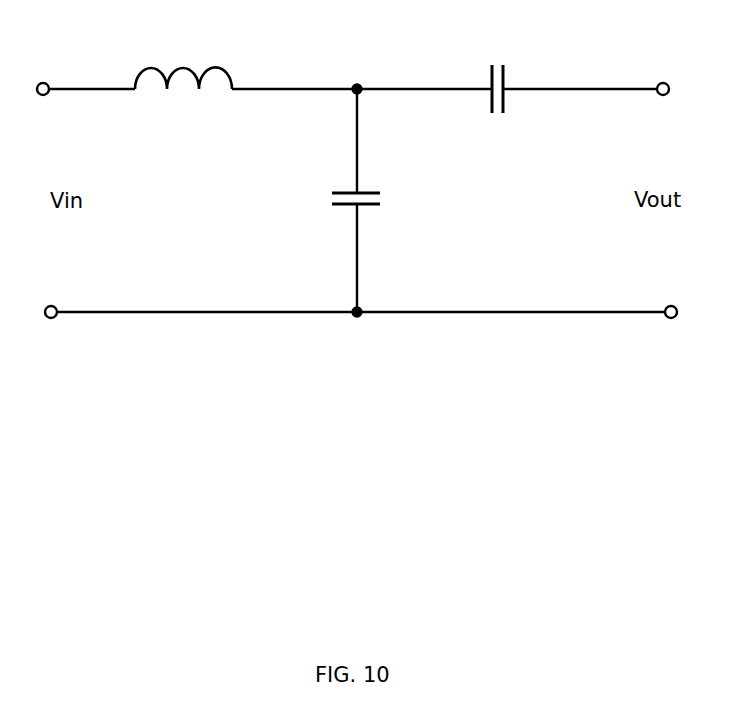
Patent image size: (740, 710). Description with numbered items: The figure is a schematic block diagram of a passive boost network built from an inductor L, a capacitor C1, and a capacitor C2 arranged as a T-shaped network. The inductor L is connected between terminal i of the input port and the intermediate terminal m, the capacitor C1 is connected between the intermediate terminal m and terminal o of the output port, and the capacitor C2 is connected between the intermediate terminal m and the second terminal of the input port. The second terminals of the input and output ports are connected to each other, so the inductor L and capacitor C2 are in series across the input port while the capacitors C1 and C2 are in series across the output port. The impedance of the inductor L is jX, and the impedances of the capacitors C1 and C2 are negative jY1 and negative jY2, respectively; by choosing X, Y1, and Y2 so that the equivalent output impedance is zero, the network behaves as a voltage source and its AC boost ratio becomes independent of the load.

The inductor L is at (183, 85).
The capacitor C1 is at (501, 101).
The capacitor C2 is at (340, 201).
The terminal of the input port i is at (41, 67).
The intermediate terminal m is at (356, 72).
The terminal of the output port o is at (665, 72).